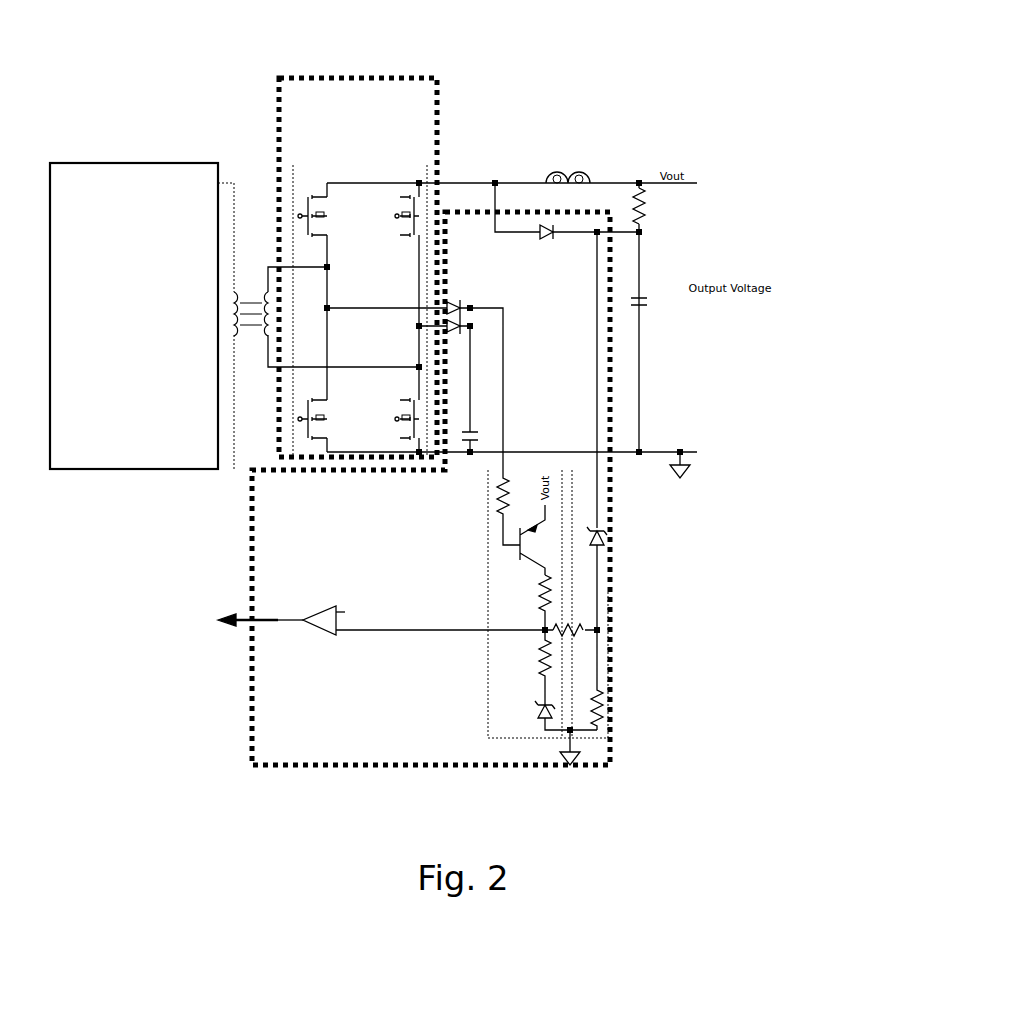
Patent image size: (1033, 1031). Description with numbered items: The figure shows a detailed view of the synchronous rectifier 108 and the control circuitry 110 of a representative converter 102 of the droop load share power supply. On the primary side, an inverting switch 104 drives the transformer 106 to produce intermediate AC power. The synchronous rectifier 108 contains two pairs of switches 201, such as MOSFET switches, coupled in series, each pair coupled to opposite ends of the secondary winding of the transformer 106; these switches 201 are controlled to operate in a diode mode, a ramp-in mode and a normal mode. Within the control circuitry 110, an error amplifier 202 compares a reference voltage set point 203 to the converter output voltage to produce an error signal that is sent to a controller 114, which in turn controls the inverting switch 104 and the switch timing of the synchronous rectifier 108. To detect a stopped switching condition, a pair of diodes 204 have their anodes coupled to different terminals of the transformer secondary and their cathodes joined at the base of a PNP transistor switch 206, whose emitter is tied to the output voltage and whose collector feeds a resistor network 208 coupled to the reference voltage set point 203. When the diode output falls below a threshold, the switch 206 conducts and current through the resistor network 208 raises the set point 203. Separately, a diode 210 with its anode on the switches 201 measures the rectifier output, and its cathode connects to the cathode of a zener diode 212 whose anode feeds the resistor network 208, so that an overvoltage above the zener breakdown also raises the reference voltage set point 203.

The converter 102 is at (597, 63).
The inverting switch 104 is at (73, 163).
The transformer 106 is at (247, 290).
The synchronous rectifier 108 is at (437, 110).
The control circuitry 110 is at (250, 702).
The controller 114 is at (162, 615).
The switches 201 is at (397, 232).
The error amplifier 202 is at (300, 628).
The reference voltage set point 203 is at (366, 633).
The diodes 204 is at (460, 314).
The switch 206 is at (502, 541).
The resistor network 208 is at (552, 624).
The diode 210 is at (545, 245).
The zener diode 212 is at (611, 546).